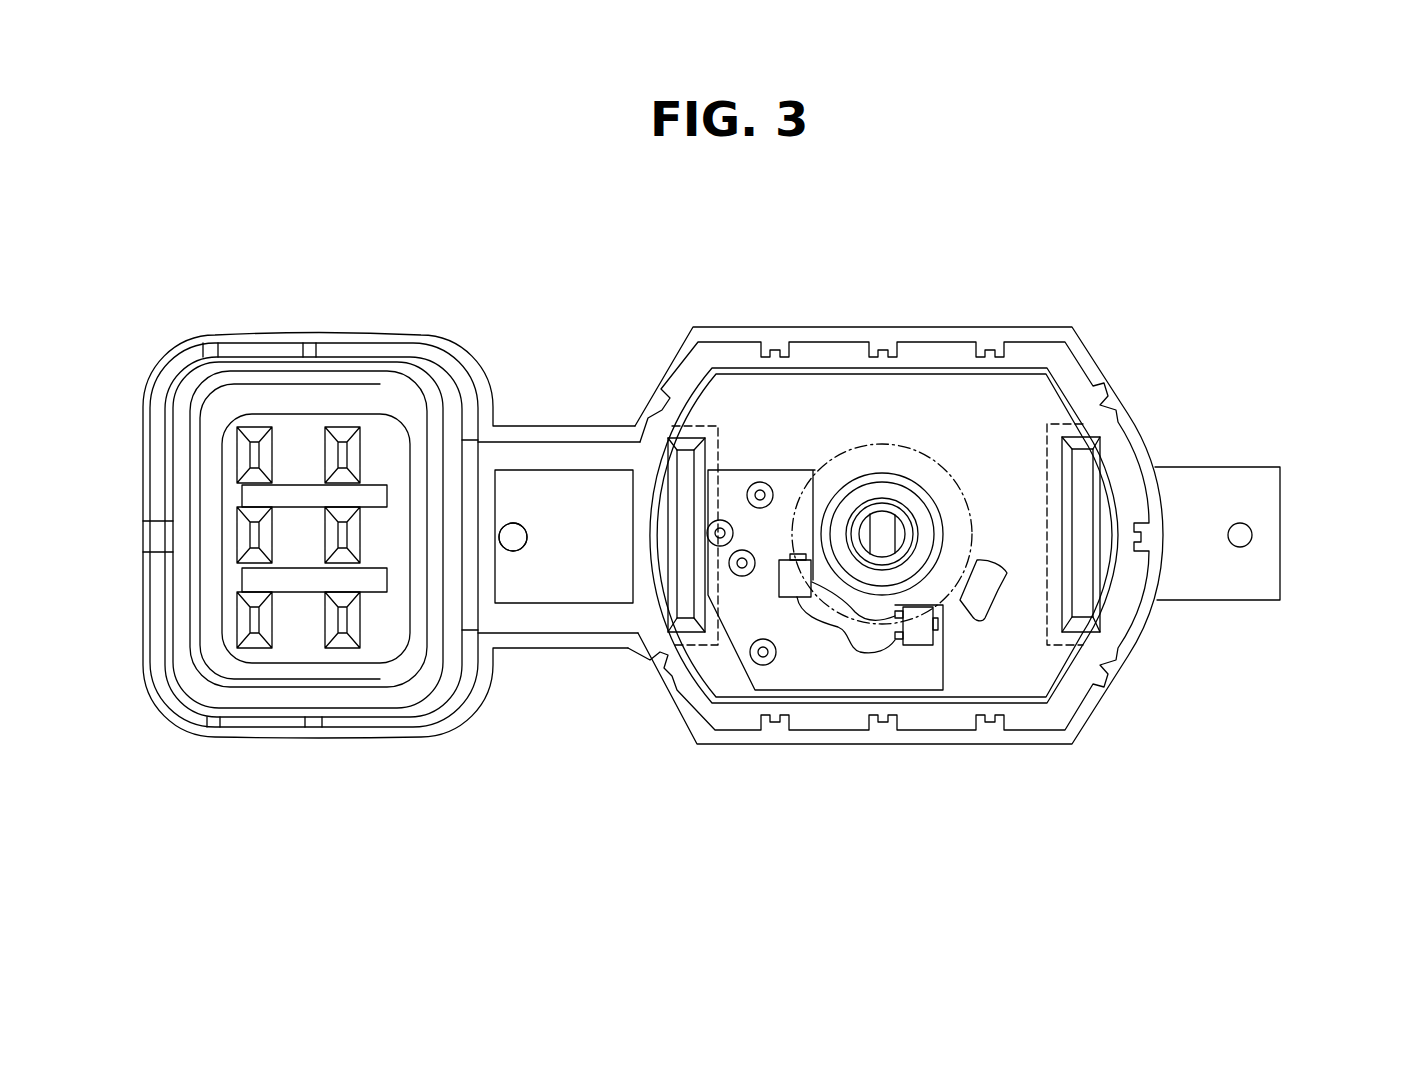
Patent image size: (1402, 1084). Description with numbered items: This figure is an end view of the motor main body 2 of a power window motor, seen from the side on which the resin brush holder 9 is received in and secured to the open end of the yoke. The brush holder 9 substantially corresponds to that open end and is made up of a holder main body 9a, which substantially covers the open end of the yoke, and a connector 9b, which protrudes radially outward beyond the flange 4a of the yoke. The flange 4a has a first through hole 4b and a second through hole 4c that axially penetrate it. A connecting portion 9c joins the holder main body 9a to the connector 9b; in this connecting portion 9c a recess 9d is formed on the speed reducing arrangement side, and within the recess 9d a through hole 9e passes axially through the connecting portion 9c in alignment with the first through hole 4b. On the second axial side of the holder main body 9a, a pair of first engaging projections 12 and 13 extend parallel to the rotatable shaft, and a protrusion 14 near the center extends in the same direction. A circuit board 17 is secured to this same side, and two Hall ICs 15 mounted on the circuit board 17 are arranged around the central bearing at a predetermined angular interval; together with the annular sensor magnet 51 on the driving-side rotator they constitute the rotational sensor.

The motor main body 2 is at (1098, 298).
The brush holder 9 is at (1137, 365).
The holder main body 9a is at (933, 390).
The connector 9b is at (313, 398).
The connecting portion 9c is at (560, 450).
The recess 9d is at (560, 603).
The through hole 9e is at (527, 533).
The first through hole 4b is at (553, 545).
The first engaging projection 12 is at (675, 455).
The first engaging projection 13 is at (1085, 470).
The protrusion 14 is at (978, 600).
The Hall ICs 15 is at (858, 620).
The circuit board 17 is at (805, 678).
The sensor magnet 51 is at (845, 449).
The flange 4a is at (1194, 483).
The second through hole 4c is at (1252, 535).